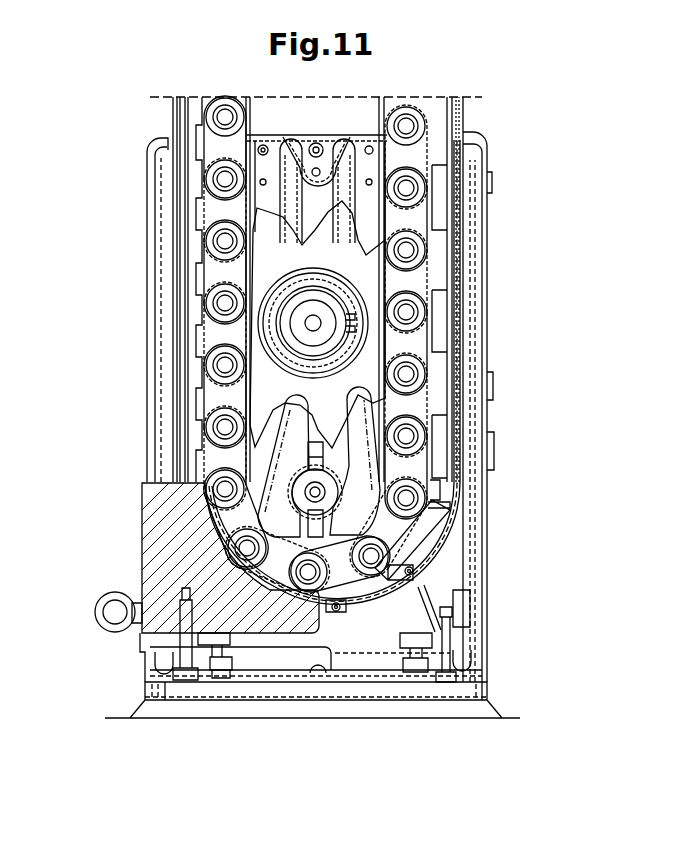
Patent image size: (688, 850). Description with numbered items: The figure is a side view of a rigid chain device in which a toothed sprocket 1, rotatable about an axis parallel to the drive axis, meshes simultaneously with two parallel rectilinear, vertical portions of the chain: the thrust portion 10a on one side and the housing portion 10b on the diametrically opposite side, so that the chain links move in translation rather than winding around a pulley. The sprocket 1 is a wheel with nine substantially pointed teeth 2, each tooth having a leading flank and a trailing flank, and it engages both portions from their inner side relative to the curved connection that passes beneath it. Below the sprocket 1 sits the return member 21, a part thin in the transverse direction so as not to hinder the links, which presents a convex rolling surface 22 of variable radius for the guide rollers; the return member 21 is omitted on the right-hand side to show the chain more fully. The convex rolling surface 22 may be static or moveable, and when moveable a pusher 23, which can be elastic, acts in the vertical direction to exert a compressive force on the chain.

The toothed sprocket 1 is at (394, 346).
The teeth 2 is at (338, 422).
The thrust portion 10a is at (186, 181).
The housing portion 10b is at (448, 268).
The return member 21 is at (178, 528).
The convex rolling surface 22 is at (280, 585).
The pusher 23 is at (187, 640).